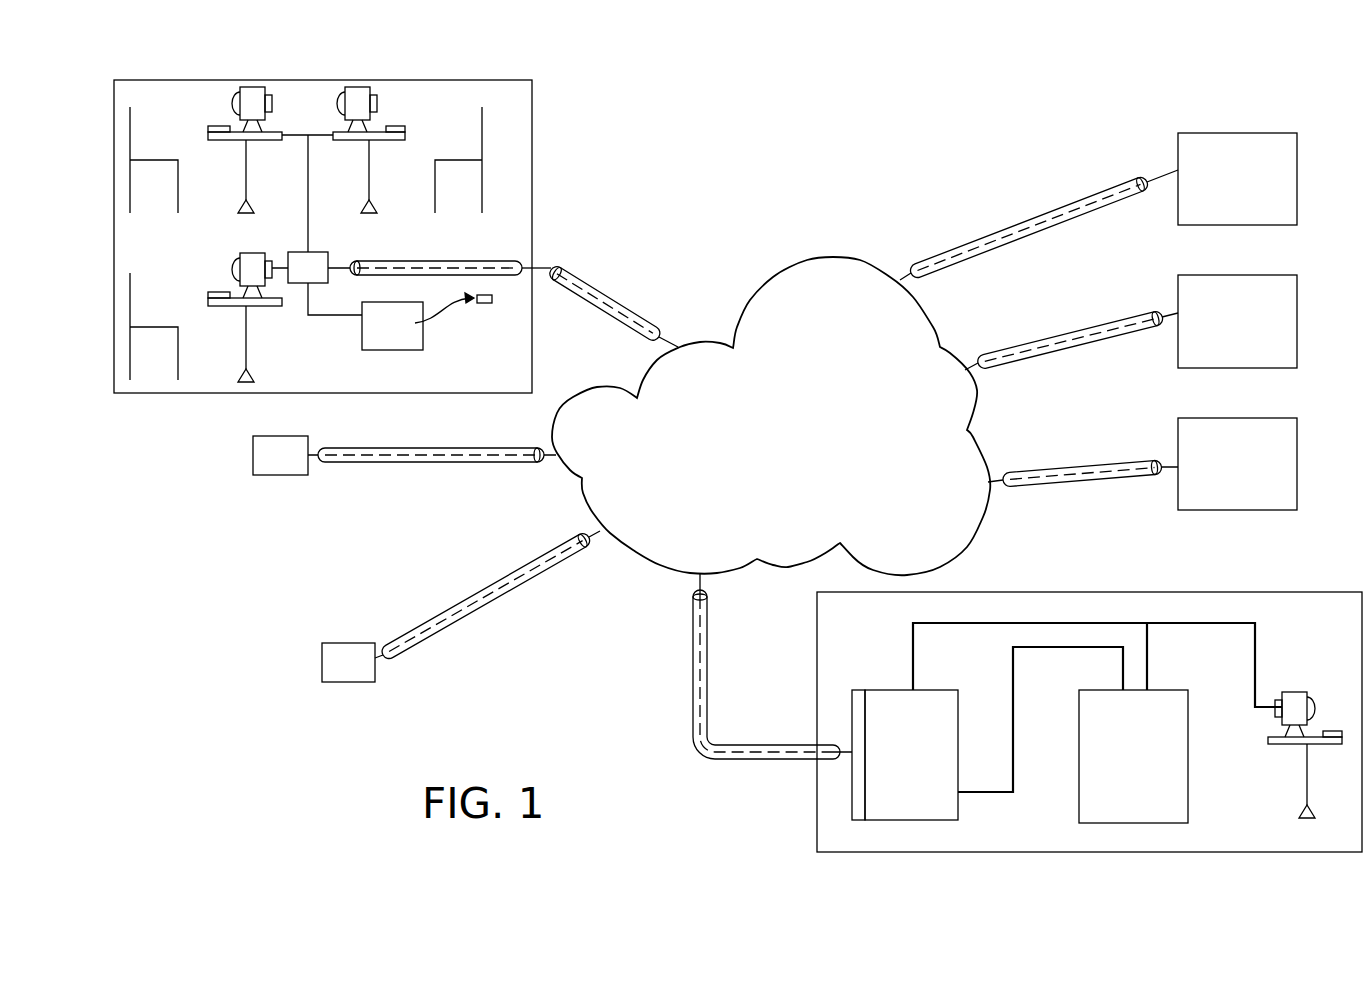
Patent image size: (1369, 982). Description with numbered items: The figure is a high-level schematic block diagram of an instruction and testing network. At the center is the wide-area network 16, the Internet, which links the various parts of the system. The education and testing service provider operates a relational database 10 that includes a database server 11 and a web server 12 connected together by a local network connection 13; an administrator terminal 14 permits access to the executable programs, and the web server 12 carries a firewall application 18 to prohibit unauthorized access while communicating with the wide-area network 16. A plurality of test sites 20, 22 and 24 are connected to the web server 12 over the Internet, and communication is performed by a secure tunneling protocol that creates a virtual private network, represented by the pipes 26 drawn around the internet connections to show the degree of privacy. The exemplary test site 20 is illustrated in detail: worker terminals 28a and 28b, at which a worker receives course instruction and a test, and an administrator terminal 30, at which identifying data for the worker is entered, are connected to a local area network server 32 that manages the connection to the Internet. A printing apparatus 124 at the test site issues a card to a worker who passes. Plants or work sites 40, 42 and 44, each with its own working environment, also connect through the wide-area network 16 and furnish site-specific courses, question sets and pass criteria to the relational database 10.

The relational database 10 is at (1175, 590).
The database server 11 is at (1132, 823).
The web server 12 is at (910, 820).
The local network connection 13 is at (1047, 648).
The administrator terminal 14 is at (1297, 692).
The wide-area network 16 is at (773, 483).
The firewall application 18 is at (858, 708).
The test site 20 is at (532, 108).
The test site 22 is at (264, 470).
The test site 24 is at (332, 677).
The pipes 26 is at (606, 291).
The worker terminal 28a is at (192, 98).
The worker terminal 28b is at (192, 267).
The administrator terminal 30 is at (422, 135).
The local area network server 32 is at (294, 280).
The plant 40 is at (1299, 187).
The plant 42 is at (1299, 331).
The plant 44 is at (1299, 481).
The printing apparatus 124 is at (405, 347).